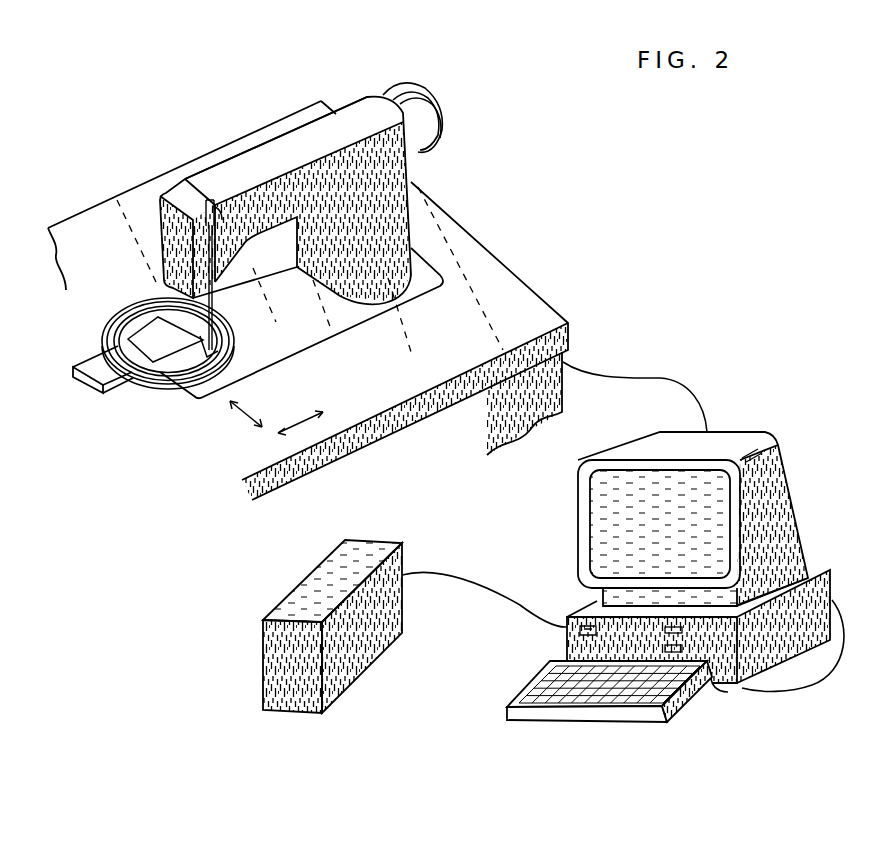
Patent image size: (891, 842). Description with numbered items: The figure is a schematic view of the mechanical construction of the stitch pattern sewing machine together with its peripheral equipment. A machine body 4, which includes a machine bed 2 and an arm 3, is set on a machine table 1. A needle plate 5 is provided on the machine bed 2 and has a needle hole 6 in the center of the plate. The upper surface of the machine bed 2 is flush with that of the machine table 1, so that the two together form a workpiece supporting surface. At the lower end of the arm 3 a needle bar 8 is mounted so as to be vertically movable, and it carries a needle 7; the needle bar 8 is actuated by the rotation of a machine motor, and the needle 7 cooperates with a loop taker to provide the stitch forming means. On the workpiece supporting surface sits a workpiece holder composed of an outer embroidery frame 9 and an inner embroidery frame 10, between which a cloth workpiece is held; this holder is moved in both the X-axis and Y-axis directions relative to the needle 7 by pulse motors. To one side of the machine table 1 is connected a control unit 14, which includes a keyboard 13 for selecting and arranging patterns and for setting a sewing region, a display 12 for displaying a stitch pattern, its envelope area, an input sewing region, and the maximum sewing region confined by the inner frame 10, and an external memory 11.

The machine table 1 is at (472, 247).
The machine bed 2 is at (365, 311).
The arm 3 is at (262, 158).
The machine body 4 is at (342, 98).
The needle plate 5 is at (200, 377).
The needle hole 6 is at (208, 338).
The needle 7 is at (214, 330).
The needle bar 8 is at (214, 303).
The outer embroidery frame 9 is at (133, 381).
The inner embroidery frame 10 is at (118, 318).
The external memory 11 is at (308, 583).
The display 12 is at (577, 490).
The keyboard 13 is at (613, 713).
The control unit 14 is at (832, 608).